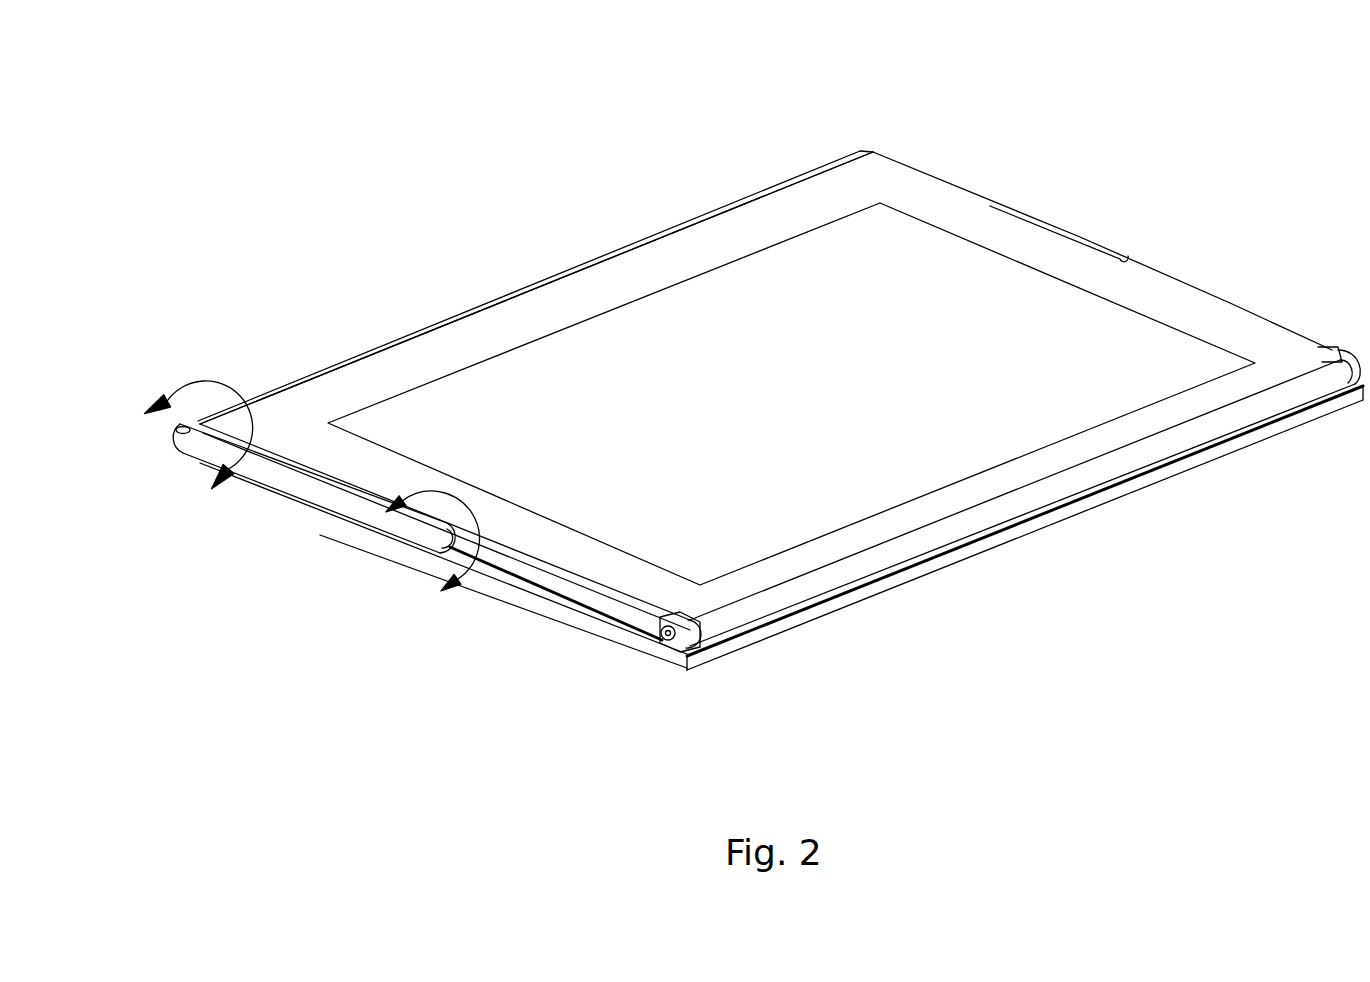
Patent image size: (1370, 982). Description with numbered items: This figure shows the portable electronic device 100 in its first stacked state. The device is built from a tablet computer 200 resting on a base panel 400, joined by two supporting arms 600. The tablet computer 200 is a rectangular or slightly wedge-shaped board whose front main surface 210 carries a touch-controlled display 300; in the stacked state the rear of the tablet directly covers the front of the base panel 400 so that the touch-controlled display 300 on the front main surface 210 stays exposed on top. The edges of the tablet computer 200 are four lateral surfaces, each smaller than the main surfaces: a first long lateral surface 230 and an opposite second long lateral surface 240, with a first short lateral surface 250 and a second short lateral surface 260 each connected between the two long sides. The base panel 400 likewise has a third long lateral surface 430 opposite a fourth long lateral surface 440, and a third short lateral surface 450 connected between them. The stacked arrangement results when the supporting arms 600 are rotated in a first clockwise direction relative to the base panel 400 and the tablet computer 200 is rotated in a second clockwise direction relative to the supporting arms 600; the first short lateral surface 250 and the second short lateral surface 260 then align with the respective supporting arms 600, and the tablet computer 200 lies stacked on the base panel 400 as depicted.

The portable electronic device 100 is at (207, 63).
The tablet computer 200 is at (945, 145).
The front main surface 210 is at (1036, 247).
The first long lateral surface 230 is at (1050, 492).
The second long lateral surface 240 is at (520, 288).
The first short lateral surface 250 is at (1237, 308).
The second short lateral surface 260 is at (280, 458).
The touch-controlled display 300 is at (1103, 317).
The base panel 400 is at (1229, 480).
The third long lateral surface 430 is at (885, 585).
The fourth long lateral surface 440 is at (407, 330).
The third short lateral surface 450 is at (547, 600).
The supporting arms 600 is at (342, 535).